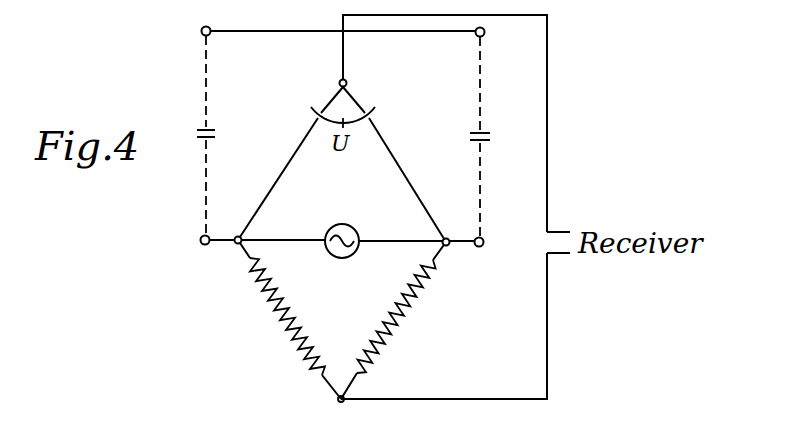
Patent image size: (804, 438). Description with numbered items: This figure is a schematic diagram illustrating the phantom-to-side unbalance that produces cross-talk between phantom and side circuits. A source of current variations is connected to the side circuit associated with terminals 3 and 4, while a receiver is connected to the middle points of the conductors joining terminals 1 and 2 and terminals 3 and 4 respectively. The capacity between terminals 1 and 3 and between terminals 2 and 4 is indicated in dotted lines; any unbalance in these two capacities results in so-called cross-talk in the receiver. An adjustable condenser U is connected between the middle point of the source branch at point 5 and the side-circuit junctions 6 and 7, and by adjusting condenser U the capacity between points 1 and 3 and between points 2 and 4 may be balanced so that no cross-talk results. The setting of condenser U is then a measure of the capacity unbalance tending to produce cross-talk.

The terminal 1 is at (200, 31).
The terminal 2 is at (485, 33).
The terminal 3 is at (200, 241).
The terminal 4 is at (484, 244).
The terminal 5 (voltage U connection point) 5 is at (343, 96).
The junction 6 is at (236, 236).
The junction 7 is at (447, 238).